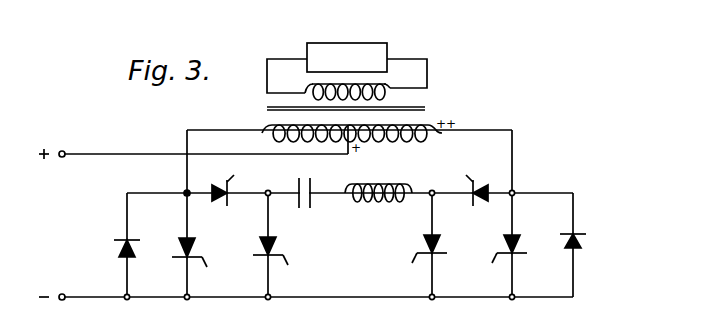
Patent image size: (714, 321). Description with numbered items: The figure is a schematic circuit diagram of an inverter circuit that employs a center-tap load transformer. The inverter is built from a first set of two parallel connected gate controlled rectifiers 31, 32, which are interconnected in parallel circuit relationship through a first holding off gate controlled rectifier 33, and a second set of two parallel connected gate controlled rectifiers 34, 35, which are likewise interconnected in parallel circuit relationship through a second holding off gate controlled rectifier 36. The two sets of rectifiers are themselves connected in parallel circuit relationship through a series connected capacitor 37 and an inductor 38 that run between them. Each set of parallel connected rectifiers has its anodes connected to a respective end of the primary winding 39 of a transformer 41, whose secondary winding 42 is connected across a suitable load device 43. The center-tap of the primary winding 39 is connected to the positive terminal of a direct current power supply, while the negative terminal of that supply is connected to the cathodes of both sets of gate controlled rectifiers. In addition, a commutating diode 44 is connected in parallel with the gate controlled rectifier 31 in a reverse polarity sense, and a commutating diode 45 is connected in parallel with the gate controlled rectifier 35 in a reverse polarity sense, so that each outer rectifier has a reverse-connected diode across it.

The load device 43 is at (350, 43).
The secondary winding 42 is at (316, 90).
The transformer 41 is at (267, 108).
The primary winding 39 is at (278, 136).
The first holding off gate controlled rectifier 33 is at (228, 183).
The capacitor 37 is at (321, 178).
The inductor 38 is at (381, 184).
The second holding off gate controlled rectifier 36 is at (474, 182).
The gate controlled rectifier 31 is at (196, 256).
The gate controlled rectifier 32 is at (278, 254).
The gate controlled rectifier 34 is at (439, 252).
The gate controlled rectifier 35 is at (518, 252).
The commutating diode 44 is at (126, 240).
The commutating diode 45 is at (583, 236).